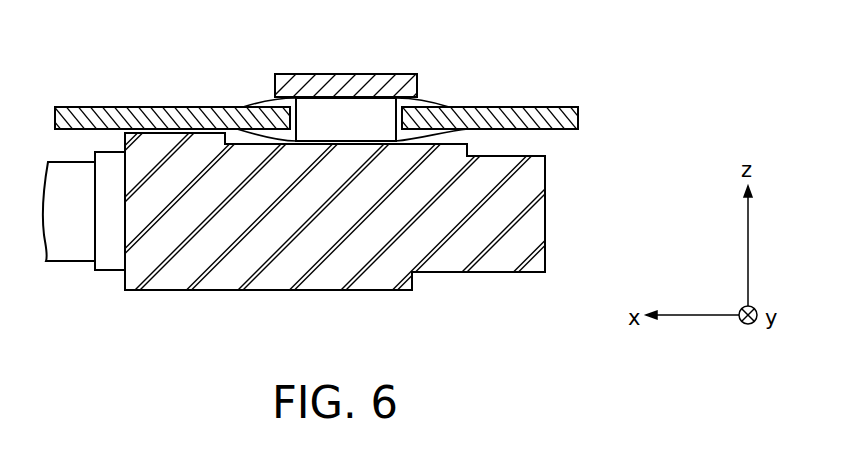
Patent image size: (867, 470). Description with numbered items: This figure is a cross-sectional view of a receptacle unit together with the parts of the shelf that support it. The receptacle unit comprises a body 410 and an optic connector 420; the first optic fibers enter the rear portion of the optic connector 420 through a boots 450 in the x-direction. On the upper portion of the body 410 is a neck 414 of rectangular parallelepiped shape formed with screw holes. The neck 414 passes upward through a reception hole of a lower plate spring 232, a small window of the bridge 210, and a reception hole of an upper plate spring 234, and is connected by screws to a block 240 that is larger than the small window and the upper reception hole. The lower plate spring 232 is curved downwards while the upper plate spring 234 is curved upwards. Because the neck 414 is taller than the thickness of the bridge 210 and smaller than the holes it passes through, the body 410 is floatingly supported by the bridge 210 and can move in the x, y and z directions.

The bridge 210 is at (533, 110).
The lower plate spring 232 is at (433, 132).
The upper plate spring 234 is at (427, 98).
The block 240 is at (296, 80).
The body 410 is at (462, 258).
The neck 414 is at (337, 117).
The optic connector 420 is at (108, 263).
The boots 450 is at (53, 253).